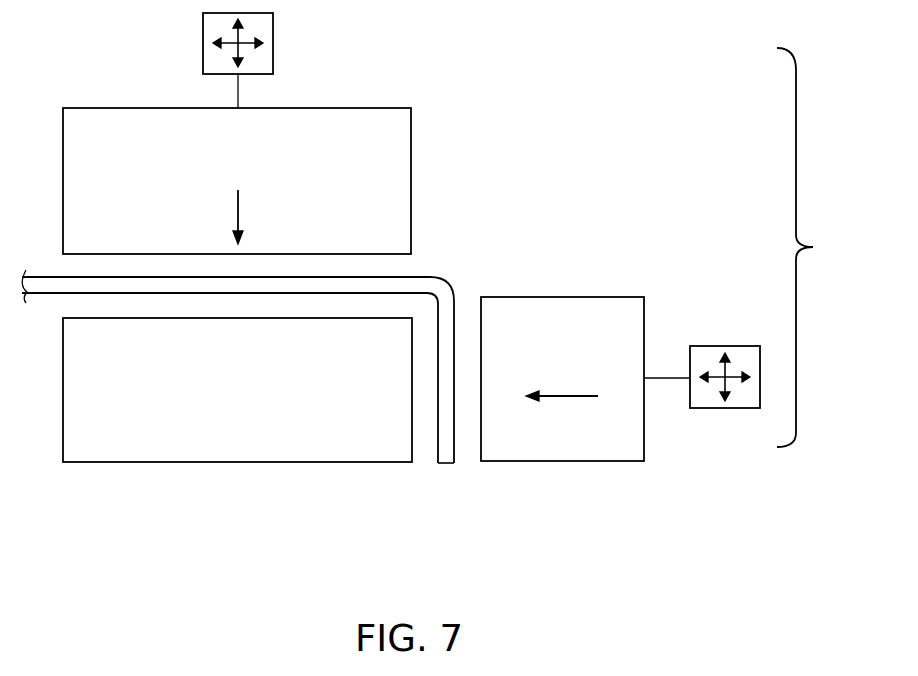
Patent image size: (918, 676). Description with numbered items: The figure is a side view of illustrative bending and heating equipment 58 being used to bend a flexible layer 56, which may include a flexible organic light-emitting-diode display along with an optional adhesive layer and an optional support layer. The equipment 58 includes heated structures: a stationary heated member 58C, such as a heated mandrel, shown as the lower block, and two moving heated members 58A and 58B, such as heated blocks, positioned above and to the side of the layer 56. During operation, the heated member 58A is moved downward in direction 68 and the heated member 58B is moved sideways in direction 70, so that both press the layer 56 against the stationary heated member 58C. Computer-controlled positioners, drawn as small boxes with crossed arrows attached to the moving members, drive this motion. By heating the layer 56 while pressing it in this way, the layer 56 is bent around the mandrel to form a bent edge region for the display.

The layer 56 is at (447, 463).
The bending and heating equipment 58 is at (812, 247).
The heated member 58A is at (411, 170).
The heated member 58B is at (555, 297).
The stationary heated member 58C is at (259, 462).
The direction 68 is at (238, 205).
The direction 70 is at (568, 398).